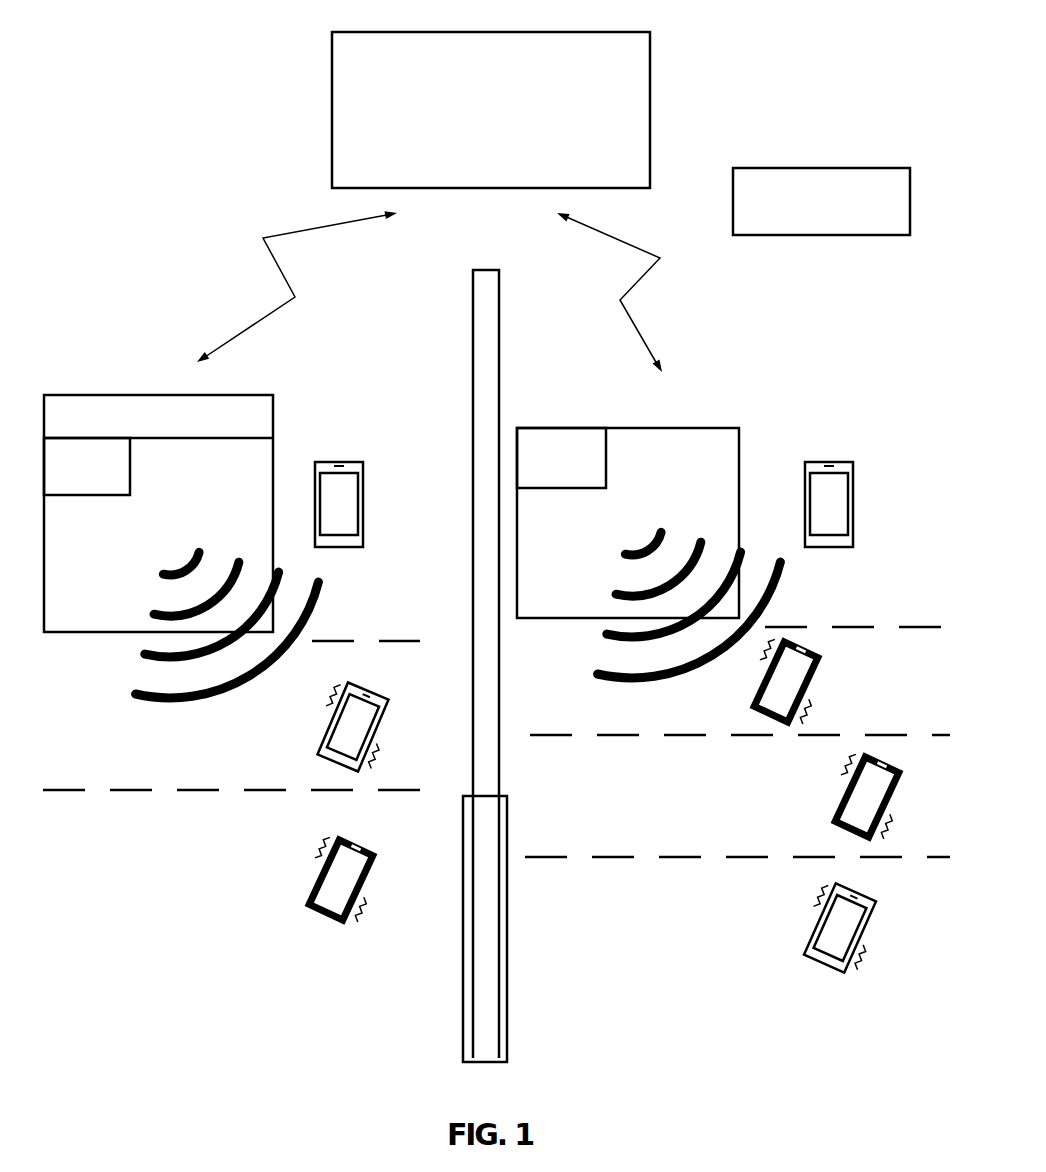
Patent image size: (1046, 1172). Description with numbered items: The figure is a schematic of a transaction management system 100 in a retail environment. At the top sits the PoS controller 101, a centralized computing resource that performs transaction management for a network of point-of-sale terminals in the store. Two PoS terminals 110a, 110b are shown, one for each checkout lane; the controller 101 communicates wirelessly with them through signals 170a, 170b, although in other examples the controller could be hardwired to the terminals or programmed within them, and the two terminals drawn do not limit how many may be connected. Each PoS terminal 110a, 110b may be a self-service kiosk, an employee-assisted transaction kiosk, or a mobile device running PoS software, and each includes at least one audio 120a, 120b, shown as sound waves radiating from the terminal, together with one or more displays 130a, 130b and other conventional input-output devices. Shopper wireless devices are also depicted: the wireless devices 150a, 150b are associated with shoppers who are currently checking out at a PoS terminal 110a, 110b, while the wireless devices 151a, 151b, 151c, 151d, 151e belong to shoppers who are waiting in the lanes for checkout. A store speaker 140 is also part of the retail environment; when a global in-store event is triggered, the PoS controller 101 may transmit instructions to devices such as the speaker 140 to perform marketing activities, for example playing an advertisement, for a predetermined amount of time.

The transaction management system 100 is at (193, 64).
The PoS controller 101 is at (491, 110).
The store speaker 140 is at (888, 211).
The signal 170a is at (277, 258).
The signal 170b is at (658, 268).
The PoS terminal 110a is at (184, 548).
The PoS terminal 110b is at (654, 531).
The audio 120a is at (133, 693).
The audio 120b is at (596, 667).
The display 130a is at (462, 935).
The display 130b is at (506, 938).
The wireless device 150a is at (364, 521).
The wireless device 150b is at (855, 507).
The wireless device 151a is at (315, 713).
The wireless device 151b is at (312, 868).
The wireless device 151c is at (818, 662).
The wireless device 151d is at (832, 783).
The wireless device 151e is at (805, 935).